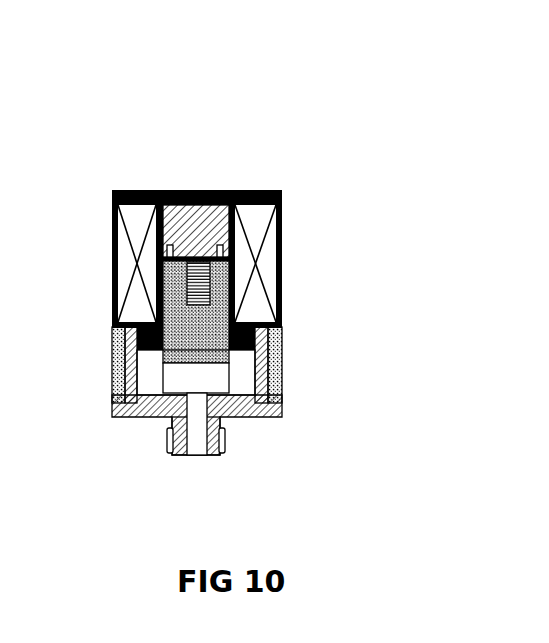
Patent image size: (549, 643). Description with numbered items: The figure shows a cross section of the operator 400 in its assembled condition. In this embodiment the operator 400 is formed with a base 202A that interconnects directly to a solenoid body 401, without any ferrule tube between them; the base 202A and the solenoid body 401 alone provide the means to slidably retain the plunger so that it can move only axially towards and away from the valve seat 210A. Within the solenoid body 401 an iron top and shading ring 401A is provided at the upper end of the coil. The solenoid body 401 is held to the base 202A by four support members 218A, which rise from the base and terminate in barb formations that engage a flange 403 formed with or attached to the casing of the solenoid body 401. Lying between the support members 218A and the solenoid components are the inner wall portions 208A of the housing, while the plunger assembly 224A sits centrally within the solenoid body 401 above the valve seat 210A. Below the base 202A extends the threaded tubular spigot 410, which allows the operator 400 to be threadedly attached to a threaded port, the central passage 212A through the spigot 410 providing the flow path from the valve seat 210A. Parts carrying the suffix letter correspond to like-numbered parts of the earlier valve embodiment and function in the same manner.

The operator 400 is at (207, 124).
The solenoid body 401 is at (142, 189).
The iron top and shading ring 401A is at (233, 190).
The armature plunger 224A is at (192, 254).
The flange 403 is at (262, 337).
The housing side wall 208A is at (110, 365).
The support members 218A is at (278, 367).
The base 202A is at (262, 420).
The valve seat 210A is at (130, 418).
The threaded tubular spigot 410 is at (170, 452).
The outlet bore 212A is at (195, 445).